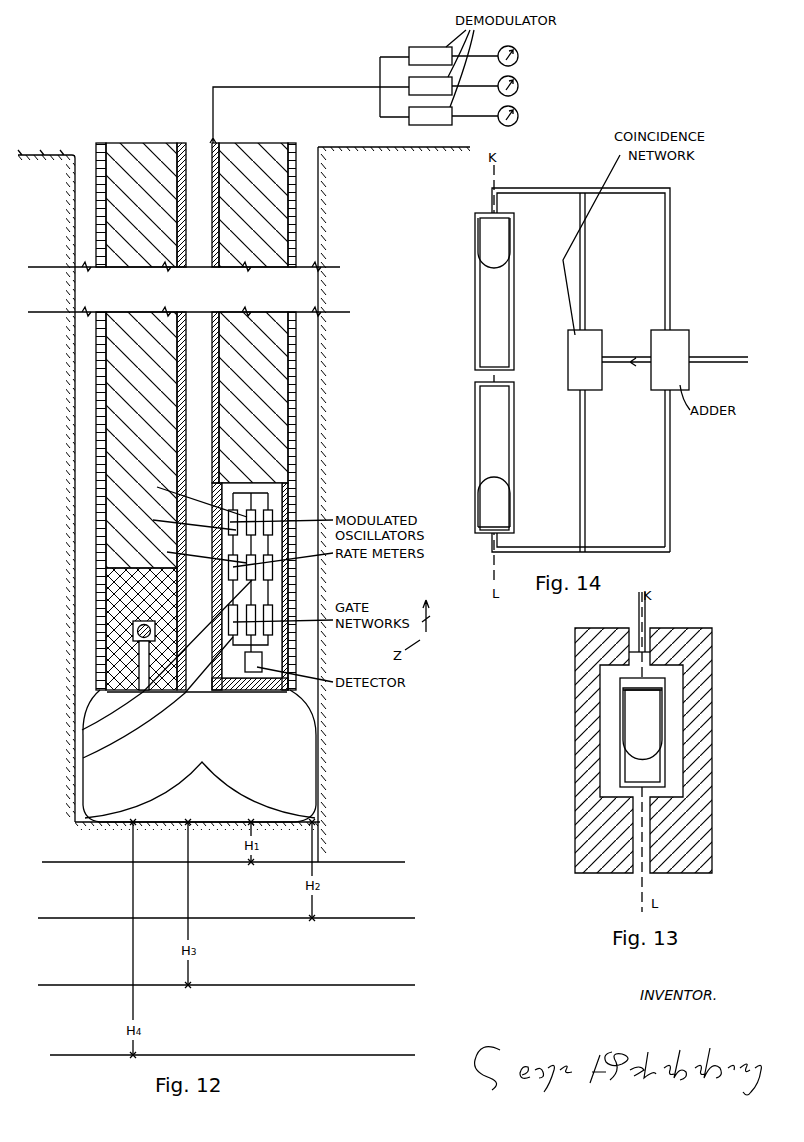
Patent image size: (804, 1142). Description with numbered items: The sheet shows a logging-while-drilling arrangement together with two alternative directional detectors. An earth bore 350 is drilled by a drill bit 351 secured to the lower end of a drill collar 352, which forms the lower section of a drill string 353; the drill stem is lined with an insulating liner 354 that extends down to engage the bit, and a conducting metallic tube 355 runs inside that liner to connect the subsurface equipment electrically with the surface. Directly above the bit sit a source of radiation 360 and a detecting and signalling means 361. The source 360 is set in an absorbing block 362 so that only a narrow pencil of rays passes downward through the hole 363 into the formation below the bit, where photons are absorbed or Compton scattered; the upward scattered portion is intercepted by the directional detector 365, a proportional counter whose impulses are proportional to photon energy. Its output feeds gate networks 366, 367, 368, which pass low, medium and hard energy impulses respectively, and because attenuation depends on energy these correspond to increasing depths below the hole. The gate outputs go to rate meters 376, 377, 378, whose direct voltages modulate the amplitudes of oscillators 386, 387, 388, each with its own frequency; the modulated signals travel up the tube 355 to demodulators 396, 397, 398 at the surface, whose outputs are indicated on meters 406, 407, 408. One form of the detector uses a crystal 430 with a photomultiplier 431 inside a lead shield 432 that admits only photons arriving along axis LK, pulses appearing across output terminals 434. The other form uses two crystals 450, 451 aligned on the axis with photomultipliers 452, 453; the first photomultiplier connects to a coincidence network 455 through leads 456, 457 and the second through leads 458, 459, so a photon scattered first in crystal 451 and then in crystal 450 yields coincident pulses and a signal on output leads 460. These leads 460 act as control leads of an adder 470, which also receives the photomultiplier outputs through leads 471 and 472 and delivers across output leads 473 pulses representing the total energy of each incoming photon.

In FIG. 12, the earth bore 350 is at (302, 360).
In FIG. 12, the drill bit 351 is at (300, 758).
In FIG. 12, the drill collar 352 is at (275, 415).
In FIG. 12, the drill string 353 is at (268, 200).
In FIG. 12, the insulating liner 354 is at (293, 252).
In FIG. 12, the metallic tube 355 is at (178, 142).
In FIG. 12, the source of radiation 360 is at (133, 632).
In FIG. 12, the detecting and signalling means 361 is at (272, 493).
In FIG. 12, the block 362 is at (110, 592).
In FIG. 12, the hole 363 is at (143, 668).
In FIG. 12, the detector 365 is at (290, 693).
In FIG. 12, the gate network 366 is at (83, 758).
In FIG. 12, the gate network 367 is at (287, 642).
In FIG. 12, the gate network 368 is at (275, 610).
In FIG. 12, the rate meter 376 is at (167, 552).
In FIG. 12, the rate meter 377 is at (82, 730).
In FIG. 12, the rate meter 378 is at (273, 575).
In FIG. 12, the oscillator 386 is at (153, 520).
In FIG. 12, the oscillator 387 is at (157, 487).
In FIG. 12, the oscillator 388 is at (270, 512).
In FIG. 12, the demodulator 396 is at (430, 56).
In FIG. 12, the demodulator 397 is at (430, 86).
In FIG. 12, the demodulator 398 is at (430, 116).
In FIG. 12, the meter 406 is at (518, 57).
In FIG. 12, the meter 407 is at (518, 87).
In FIG. 12, the meter 408 is at (518, 117).
In FIG. 14, the crystal 450 is at (485, 332).
In FIG. 14, the crystal 451 is at (487, 440).
In FIG. 14, the photomultiplier 452 is at (490, 225).
In FIG. 14, the photomultiplier 453 is at (500, 520).
In FIG. 14, the coincidence network 455 is at (578, 385).
In FIG. 14, the lead 456 is at (534, 188).
In FIG. 14, the lead 457 is at (584, 258).
In FIG. 14, the lead 458 is at (526, 547).
In FIG. 14, the lead 459 is at (581, 473).
In FIG. 14, the output leads 460 is at (630, 363).
In FIG. 14, the adder 470 is at (658, 335).
In FIG. 14, the lead 471 is at (664, 193).
In FIG. 14, the lead 472 is at (648, 548).
In FIG. 14, the output leads 473 is at (704, 355).
In FIG. 13, the crystal 430 is at (633, 772).
In FIG. 13, the photomultiplier 431 is at (633, 720).
In FIG. 13, the lead shield 432 is at (683, 720).
In FIG. 13, the output terminals 434 is at (646, 615).